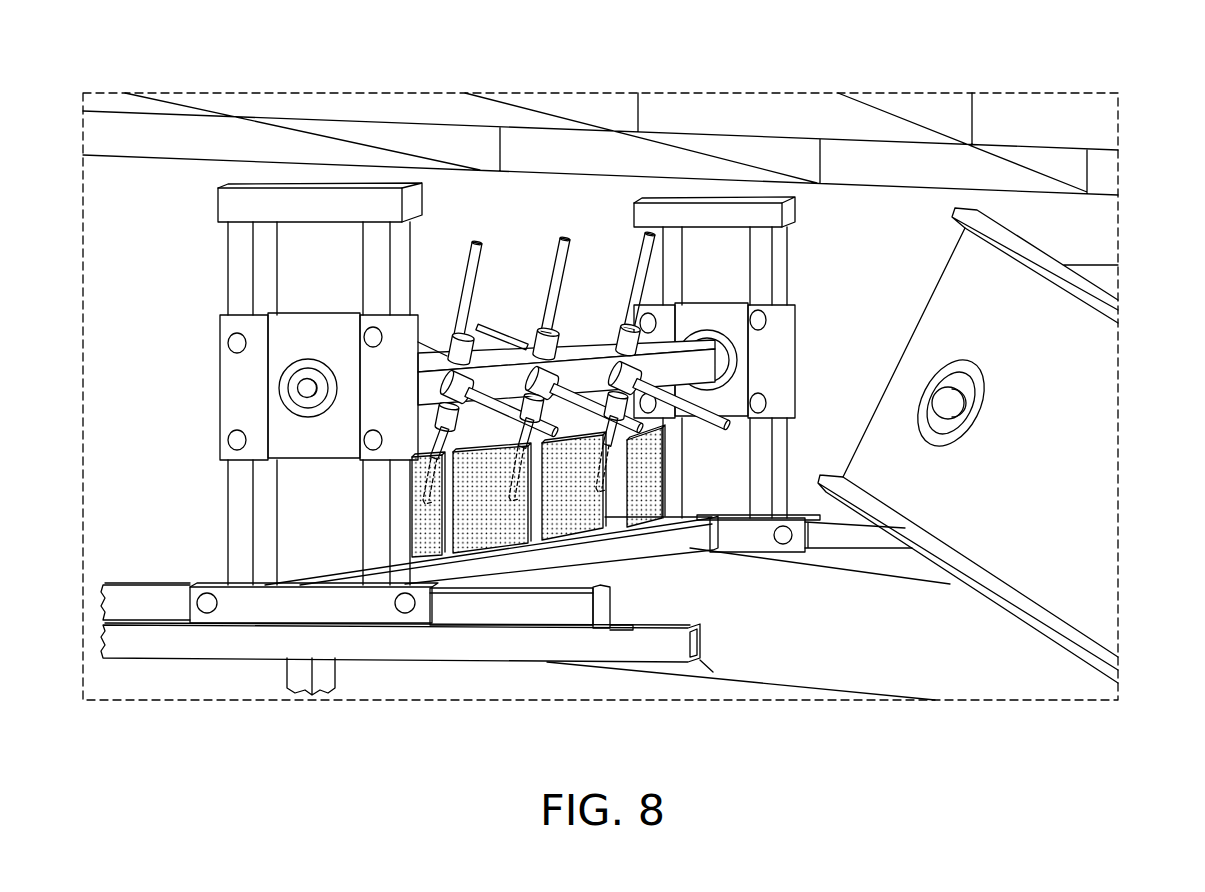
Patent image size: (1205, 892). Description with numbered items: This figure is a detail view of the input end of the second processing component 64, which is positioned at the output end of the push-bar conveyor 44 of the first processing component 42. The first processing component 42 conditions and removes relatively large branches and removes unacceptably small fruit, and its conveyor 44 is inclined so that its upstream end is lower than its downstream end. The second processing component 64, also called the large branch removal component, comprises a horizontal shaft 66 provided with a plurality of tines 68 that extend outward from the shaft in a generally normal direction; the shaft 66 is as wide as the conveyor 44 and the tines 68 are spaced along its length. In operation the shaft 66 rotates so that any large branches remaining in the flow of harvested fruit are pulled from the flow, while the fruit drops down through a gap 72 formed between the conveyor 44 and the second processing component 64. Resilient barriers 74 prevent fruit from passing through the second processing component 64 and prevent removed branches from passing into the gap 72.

The first processing component 42 is at (1118, 400).
The push-bar conveyor 44 is at (897, 463).
The second processing component 64 is at (180, 293).
The horizontal shaft 66 is at (600, 352).
The tines 68 is at (558, 268).
The gap 72 is at (992, 621).
The resilient barriers 74 is at (637, 505).